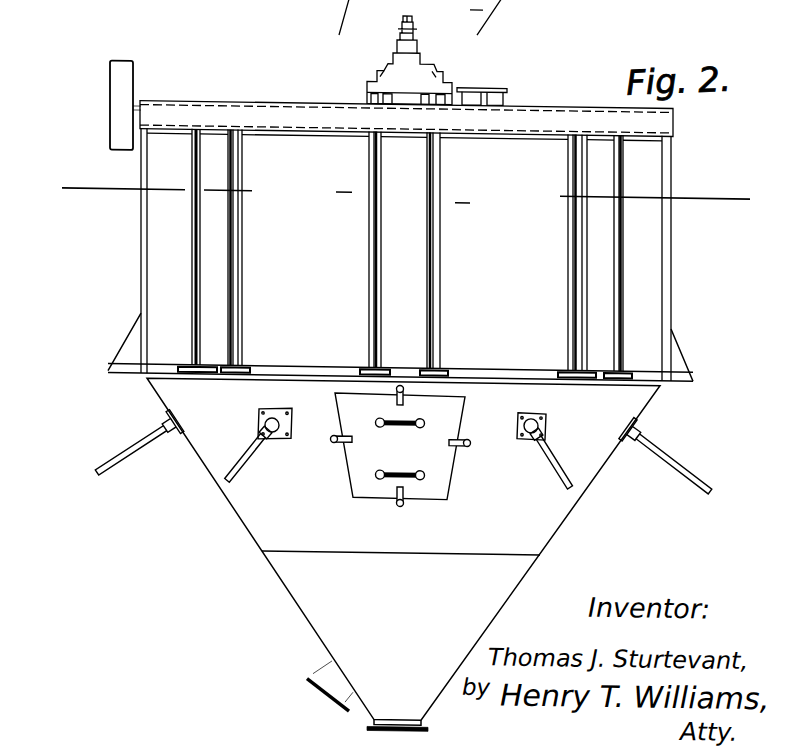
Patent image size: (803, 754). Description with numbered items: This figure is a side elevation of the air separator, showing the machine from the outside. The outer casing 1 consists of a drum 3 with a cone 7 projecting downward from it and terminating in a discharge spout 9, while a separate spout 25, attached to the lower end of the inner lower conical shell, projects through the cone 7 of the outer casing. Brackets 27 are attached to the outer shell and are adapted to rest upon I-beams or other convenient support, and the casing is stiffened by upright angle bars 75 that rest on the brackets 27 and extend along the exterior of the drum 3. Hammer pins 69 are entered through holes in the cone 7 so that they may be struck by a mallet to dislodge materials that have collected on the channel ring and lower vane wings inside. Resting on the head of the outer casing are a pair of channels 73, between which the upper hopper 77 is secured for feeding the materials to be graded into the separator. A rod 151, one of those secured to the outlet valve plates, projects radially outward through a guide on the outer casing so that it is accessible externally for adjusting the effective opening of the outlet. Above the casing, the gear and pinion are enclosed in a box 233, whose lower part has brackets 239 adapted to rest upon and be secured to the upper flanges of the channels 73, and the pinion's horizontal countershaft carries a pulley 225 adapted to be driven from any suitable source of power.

The outer casing 1 is at (128, 240).
The drum 3 is at (158, 255).
The cone 7 is at (262, 548).
The discharge spout 9 is at (374, 714).
The spout 25 is at (328, 680).
The brackets 27 is at (125, 345).
The hammer pins 69 is at (228, 470).
The channels 73 is at (236, 117).
The upright angle bars 75 is at (147, 209).
The upper hopper 77 is at (510, 96).
The rod 151 is at (112, 188).
The pulley 225 is at (110, 97).
The box 233 is at (430, 66).
The brackets 239 is at (367, 91).